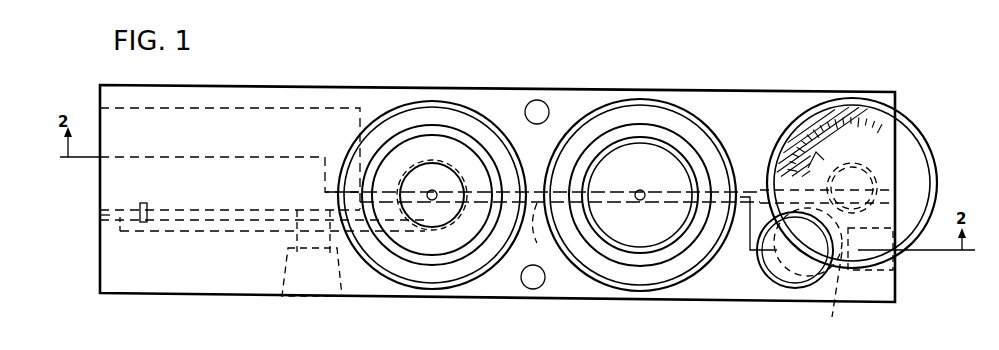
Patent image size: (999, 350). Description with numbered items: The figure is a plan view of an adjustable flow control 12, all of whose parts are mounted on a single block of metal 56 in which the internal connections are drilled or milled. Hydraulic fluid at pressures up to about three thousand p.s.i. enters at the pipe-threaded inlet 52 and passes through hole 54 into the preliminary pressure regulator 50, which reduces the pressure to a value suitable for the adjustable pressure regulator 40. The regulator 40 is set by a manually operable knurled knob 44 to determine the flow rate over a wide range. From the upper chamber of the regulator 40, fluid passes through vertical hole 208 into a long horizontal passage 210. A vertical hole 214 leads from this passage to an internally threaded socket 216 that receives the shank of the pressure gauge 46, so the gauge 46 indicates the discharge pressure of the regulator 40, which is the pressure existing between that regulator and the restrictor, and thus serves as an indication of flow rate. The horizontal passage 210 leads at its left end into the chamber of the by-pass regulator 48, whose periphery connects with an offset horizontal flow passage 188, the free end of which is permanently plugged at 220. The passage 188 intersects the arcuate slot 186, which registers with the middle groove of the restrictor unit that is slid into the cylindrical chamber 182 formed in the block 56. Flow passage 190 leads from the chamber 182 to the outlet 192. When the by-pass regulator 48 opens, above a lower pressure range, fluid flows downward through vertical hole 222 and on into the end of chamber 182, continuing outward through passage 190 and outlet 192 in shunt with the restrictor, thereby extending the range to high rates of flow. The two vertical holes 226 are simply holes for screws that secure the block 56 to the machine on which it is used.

The flow control 12 is at (392, 305).
The adjustable pressure regulator 40 is at (720, 118).
The knurled knob 44 is at (652, 155).
The pressure gauge 46 is at (917, 128).
The by-pass regulator 48 is at (450, 109).
The preliminary pressure regulator 50 is at (793, 292).
The inlet 52 is at (903, 270).
The hole 54 is at (832, 317).
The block 56 is at (590, 98).
The cylindrical chamber 182 is at (110, 111).
The slot 186 is at (143, 207).
The horizontal flow passage 188 is at (163, 225).
The flow passage 190 is at (293, 238).
The outlet 192 is at (312, 294).
The vertical hole 208 is at (646, 200).
The horizontal passage 210 is at (546, 231).
The vertical hole 214 is at (868, 178).
The internally threaded socket 216 is at (876, 165).
The plug 220 is at (100, 225).
The vertical hole 222 is at (437, 187).
The vertical holes 226 is at (544, 100).